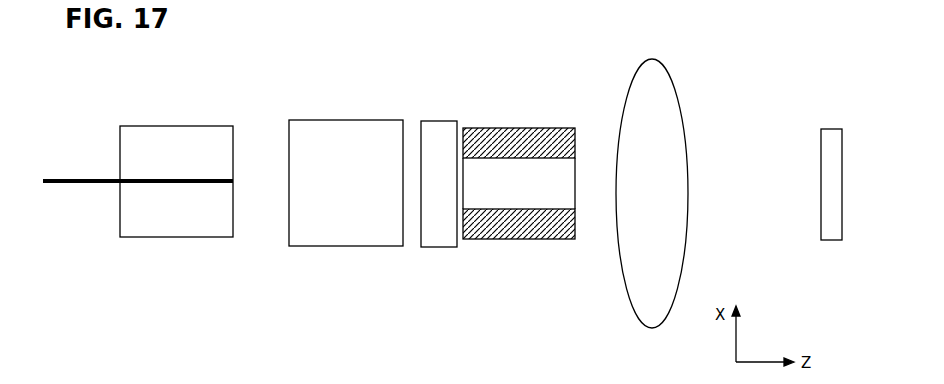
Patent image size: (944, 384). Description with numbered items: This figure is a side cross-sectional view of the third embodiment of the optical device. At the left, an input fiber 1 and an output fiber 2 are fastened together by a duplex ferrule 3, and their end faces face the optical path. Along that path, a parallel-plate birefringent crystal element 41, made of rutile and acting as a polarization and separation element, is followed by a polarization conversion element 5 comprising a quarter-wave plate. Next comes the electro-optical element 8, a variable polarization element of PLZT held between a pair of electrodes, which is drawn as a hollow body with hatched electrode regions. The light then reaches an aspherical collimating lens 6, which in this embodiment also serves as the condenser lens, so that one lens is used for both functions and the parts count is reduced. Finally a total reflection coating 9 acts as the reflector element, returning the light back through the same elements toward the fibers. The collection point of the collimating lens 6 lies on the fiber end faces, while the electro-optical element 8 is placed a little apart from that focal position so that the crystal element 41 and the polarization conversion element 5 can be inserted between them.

The input fiber 1 is at (138, 167).
The output fiber 2 is at (81, 198).
The duplex ferrule 3 is at (176, 168).
The parallel-plate birefringent crystal element 41 is at (346, 170).
The polarization conversion element 5 is at (439, 200).
The collimating lens 6 is at (652, 177).
The electro-optical element 8 is at (519, 170).
The total reflection coating 9 is at (831, 203).